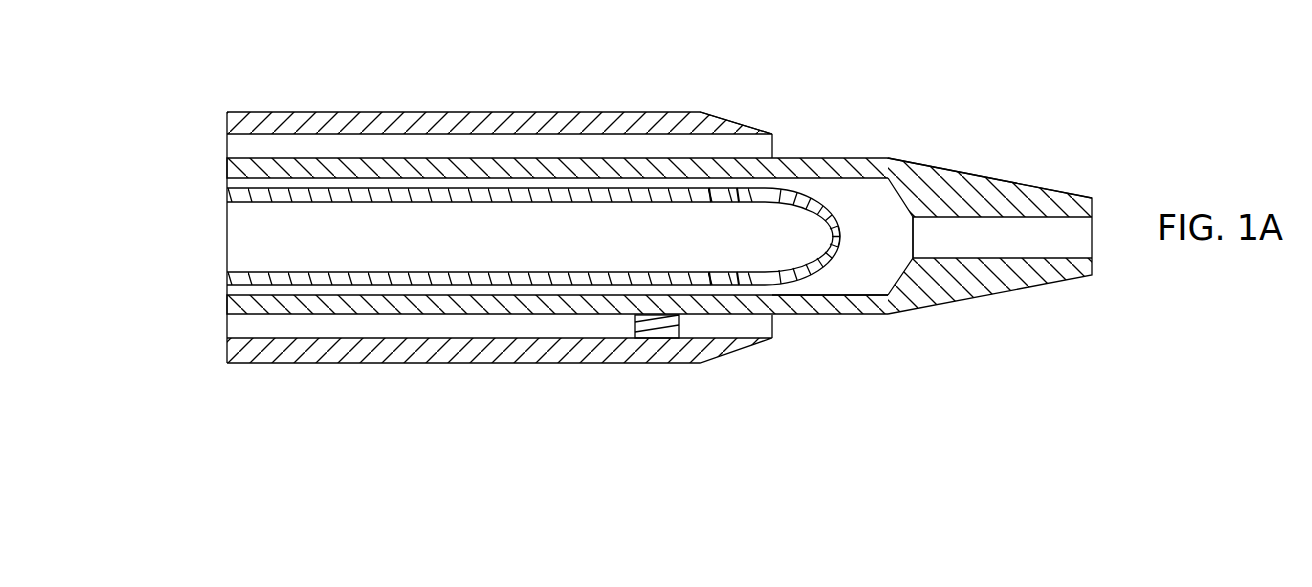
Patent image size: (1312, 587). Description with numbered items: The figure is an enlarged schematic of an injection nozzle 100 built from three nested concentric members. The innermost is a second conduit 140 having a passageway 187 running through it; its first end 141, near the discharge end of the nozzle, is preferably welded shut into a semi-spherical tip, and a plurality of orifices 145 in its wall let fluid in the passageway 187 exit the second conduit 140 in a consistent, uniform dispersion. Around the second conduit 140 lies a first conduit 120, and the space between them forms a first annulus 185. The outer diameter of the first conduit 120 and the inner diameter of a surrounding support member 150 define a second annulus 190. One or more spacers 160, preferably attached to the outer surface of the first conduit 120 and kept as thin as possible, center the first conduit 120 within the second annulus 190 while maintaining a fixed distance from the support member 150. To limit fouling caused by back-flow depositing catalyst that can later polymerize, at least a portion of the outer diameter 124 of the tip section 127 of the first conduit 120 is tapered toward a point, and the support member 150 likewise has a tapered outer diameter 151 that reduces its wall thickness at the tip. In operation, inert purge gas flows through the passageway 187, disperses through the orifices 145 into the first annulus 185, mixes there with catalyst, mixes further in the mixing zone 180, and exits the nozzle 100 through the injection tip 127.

The injection nozzle 100 is at (235, 68).
The first conduit 120 is at (808, 309).
The outer diameter of the tip section 124 is at (970, 174).
The tip section 127 is at (1018, 202).
The second conduit 140 is at (237, 282).
The first end 141 is at (842, 233).
The orifices 145 is at (737, 203).
The support member 150 is at (486, 124).
The tapered outer diameter 151 is at (700, 112).
The spacer 160 is at (680, 333).
The mixing zone 180 is at (883, 214).
The first annulus 185 is at (237, 184).
The passageway 187 is at (337, 243).
The second annulus 190 is at (349, 147).